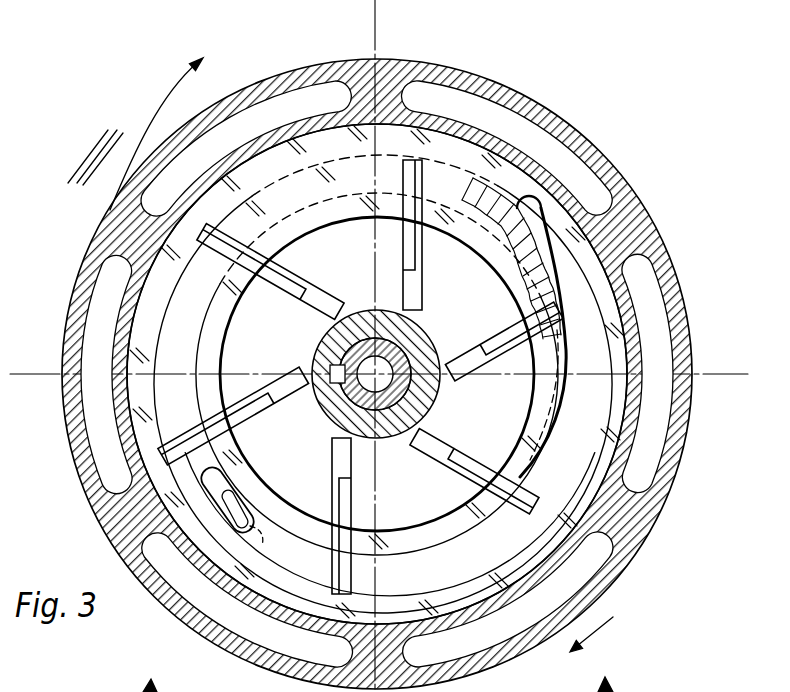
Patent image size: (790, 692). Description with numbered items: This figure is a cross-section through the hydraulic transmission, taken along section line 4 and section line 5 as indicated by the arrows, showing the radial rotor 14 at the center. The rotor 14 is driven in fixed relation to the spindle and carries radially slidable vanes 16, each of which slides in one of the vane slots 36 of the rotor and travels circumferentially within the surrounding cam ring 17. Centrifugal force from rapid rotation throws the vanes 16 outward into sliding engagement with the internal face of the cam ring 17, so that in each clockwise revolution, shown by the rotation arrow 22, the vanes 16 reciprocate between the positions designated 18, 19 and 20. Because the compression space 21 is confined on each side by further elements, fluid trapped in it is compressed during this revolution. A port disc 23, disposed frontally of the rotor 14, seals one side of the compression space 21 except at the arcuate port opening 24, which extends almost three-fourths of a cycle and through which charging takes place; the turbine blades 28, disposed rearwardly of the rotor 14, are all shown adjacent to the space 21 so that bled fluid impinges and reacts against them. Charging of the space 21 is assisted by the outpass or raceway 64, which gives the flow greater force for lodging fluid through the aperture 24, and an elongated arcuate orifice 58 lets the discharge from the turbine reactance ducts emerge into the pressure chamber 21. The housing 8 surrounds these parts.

The section line 4- 4 is at (30, 386).
The section line 5- 5 is at (362, 23).
The rotor vane 8 is at (430, 172).
The radial rotor 14 is at (298, 205).
The vanes 16 is at (463, 190).
The cam ring 17 is at (493, 540).
The vane position 18 is at (510, 460).
The vane position 19 is at (187, 428).
The vane position 20 is at (500, 348).
The compression space 21 is at (297, 150).
The direction of rotation 22 is at (157, 90).
The port disc 23 is at (590, 232).
The arcuate port opening 24 is at (175, 347).
The turbine blades 28 is at (508, 160).
The vane slots 36 is at (417, 440).
The elongated arcuate orifice 58 is at (213, 508).
The outpass or raceway 64 is at (547, 233).